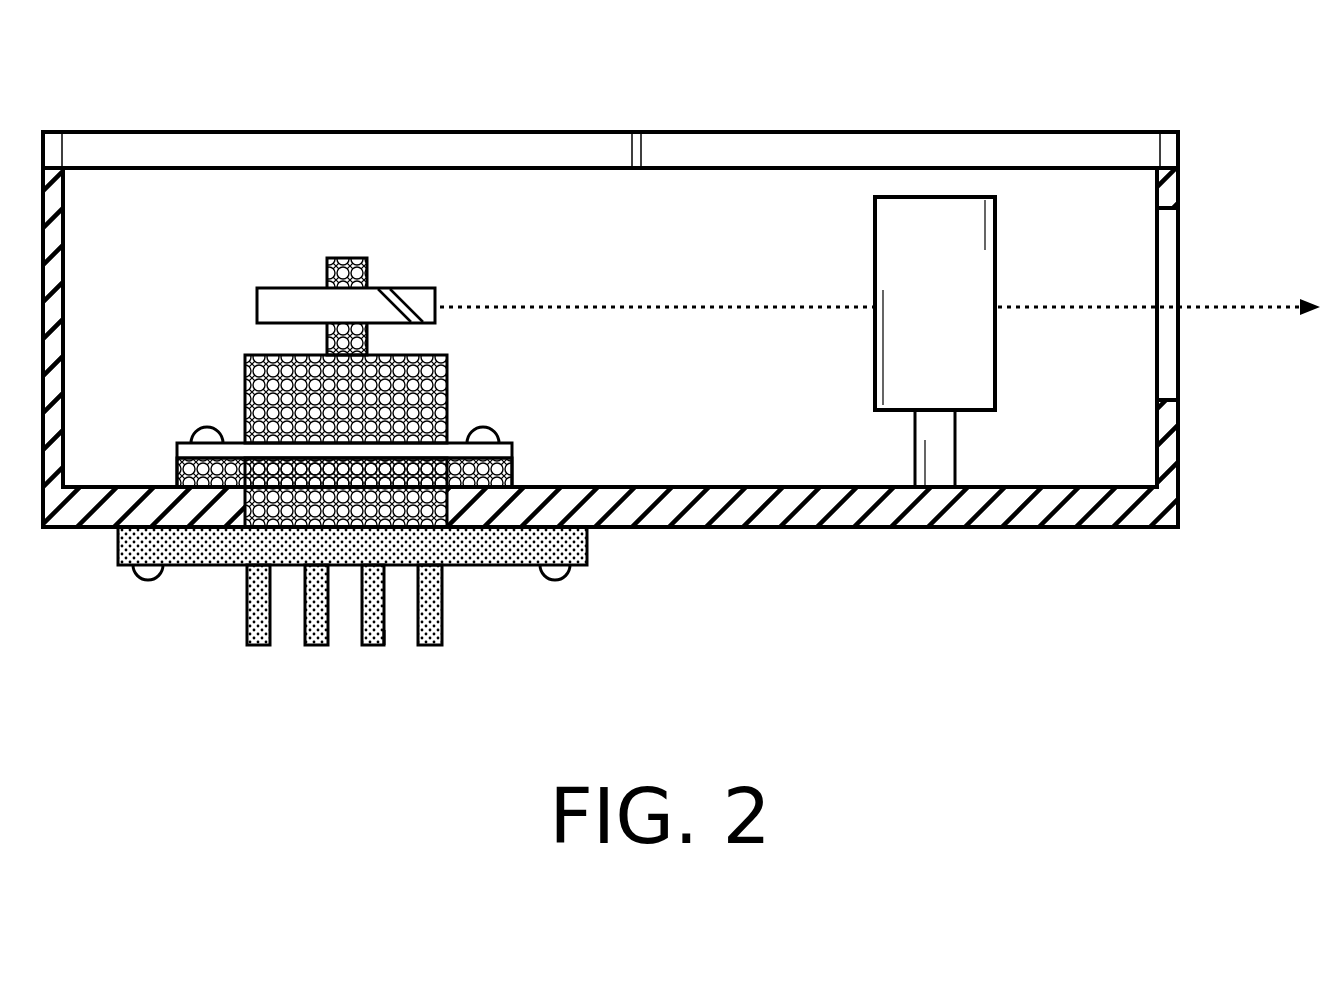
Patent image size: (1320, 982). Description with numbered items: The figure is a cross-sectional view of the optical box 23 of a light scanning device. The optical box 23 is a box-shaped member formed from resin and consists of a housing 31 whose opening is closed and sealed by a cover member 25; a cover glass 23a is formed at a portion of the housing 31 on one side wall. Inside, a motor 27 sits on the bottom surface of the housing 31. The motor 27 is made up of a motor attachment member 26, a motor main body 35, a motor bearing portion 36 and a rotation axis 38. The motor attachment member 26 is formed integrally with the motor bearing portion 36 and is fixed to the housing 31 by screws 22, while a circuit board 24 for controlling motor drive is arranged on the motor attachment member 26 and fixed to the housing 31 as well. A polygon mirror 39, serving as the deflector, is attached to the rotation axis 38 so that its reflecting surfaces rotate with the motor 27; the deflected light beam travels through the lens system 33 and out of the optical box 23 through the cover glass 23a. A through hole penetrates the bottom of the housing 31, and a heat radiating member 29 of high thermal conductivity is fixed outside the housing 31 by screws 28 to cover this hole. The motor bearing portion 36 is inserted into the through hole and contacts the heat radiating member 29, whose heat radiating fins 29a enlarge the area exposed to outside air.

The screws 22 is at (198, 427).
The optical box 23 is at (1226, 132).
The cover glass 23a is at (1180, 250).
The circuit board 24 is at (173, 450).
The cover member 25 is at (678, 150).
The motor attachment member 26 is at (515, 458).
The motor 27 is at (466, 374).
The screws 28 is at (142, 584).
The heat radiating member 29 is at (470, 590).
The heat radiating fins 29a is at (383, 637).
The housing 31 is at (1050, 530).
The lens system 33 is at (968, 246).
The motor main body 35 is at (285, 388).
The motor bearing portion 36 is at (270, 510).
The rotation axis 38 is at (327, 272).
The polygon mirror 39 is at (395, 290).